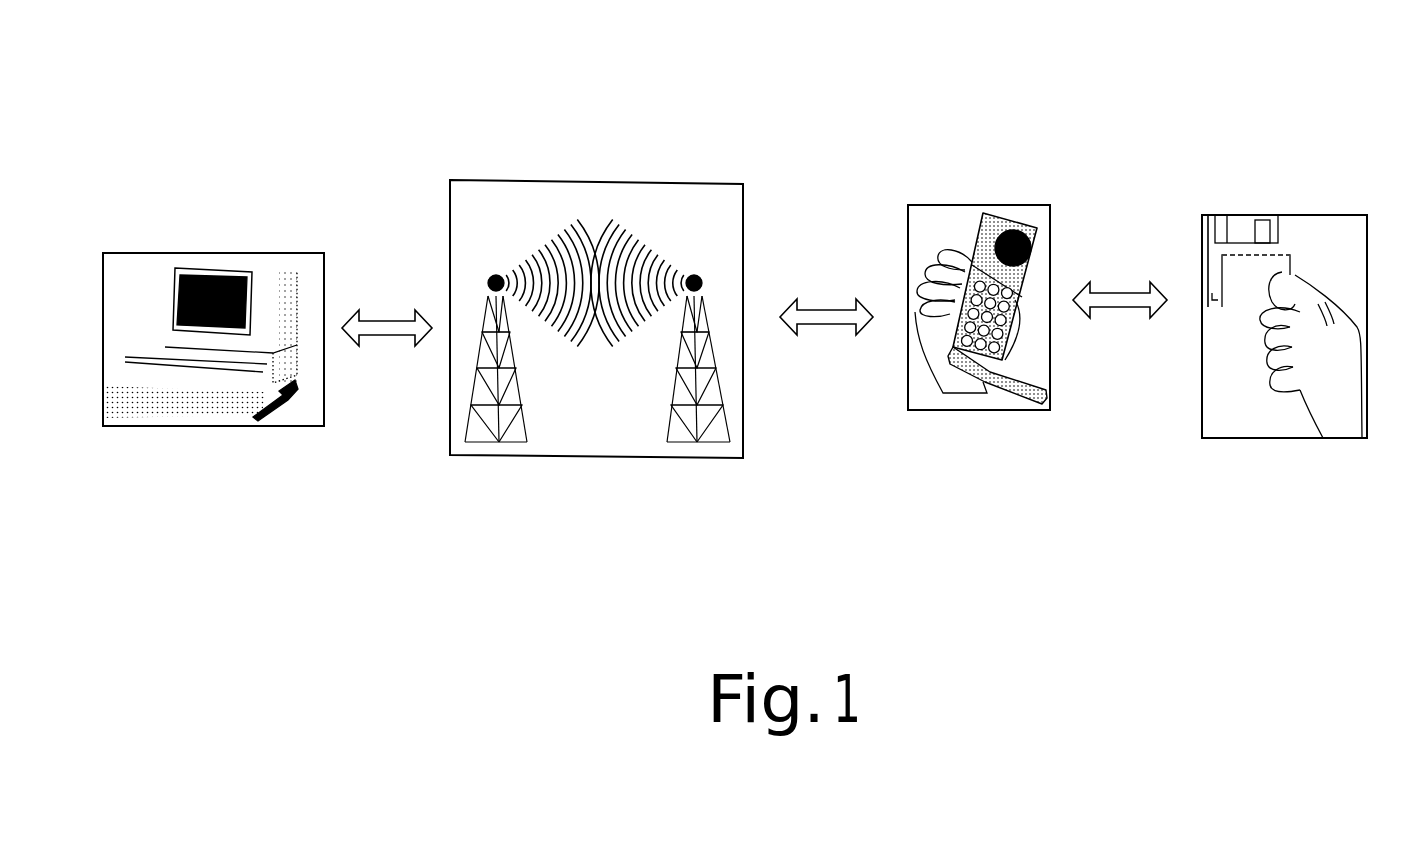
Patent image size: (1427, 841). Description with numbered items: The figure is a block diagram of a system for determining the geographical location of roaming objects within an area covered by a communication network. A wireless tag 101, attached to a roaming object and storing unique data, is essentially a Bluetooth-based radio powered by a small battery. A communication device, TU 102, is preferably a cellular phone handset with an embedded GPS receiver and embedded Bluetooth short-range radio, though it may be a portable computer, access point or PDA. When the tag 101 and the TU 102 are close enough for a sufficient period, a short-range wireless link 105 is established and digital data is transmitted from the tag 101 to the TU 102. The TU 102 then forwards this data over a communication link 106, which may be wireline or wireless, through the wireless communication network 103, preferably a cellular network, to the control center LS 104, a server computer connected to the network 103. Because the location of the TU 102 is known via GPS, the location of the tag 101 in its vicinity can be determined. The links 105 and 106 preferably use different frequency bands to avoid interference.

The wireless tag 101 is at (1258, 263).
The TU (communication device) 102 is at (1023, 227).
The wireless communication network 103 is at (670, 205).
The control center (LS) 104 is at (250, 253).
The wireless link between tag and TU 105 is at (1113, 300).
The communication link 106 is at (837, 315).